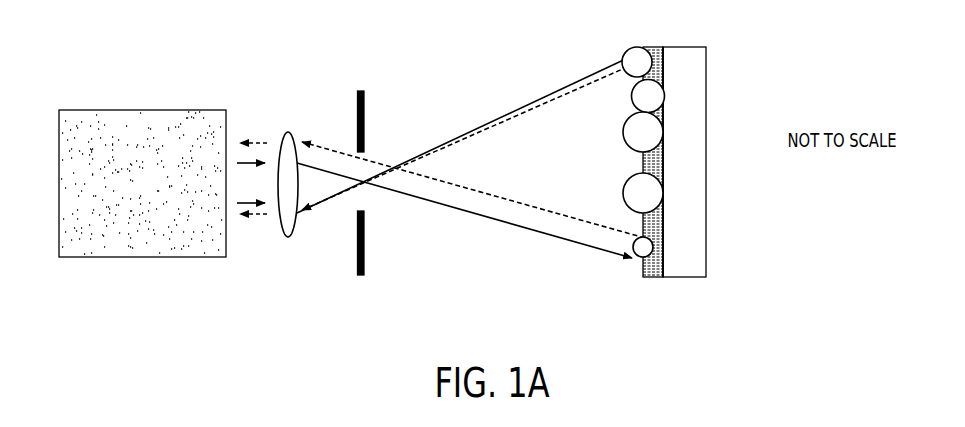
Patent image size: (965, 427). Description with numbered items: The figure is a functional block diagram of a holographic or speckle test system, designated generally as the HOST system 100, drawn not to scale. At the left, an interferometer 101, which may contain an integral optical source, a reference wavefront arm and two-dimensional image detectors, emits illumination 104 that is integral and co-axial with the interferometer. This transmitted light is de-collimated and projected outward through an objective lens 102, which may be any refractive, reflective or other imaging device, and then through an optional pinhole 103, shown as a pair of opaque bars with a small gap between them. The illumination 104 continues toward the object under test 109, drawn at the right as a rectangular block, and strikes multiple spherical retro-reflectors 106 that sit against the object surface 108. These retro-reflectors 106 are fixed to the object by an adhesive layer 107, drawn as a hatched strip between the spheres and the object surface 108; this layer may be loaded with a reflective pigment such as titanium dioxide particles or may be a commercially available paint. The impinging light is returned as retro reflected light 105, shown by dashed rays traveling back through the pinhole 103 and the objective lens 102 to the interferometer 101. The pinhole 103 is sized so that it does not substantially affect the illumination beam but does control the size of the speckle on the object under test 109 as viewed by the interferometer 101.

The HOST system 100 is at (766, 63).
The interferometer 101 is at (142, 257).
The objective lens 102 is at (289, 132).
The pinhole 103 is at (360, 275).
The illumination 104 is at (500, 220).
The retro reflected light 105 is at (538, 213).
The retro-reflectors 106 is at (733, 88).
The adhesive layer 107 is at (655, 277).
The object surface 108 is at (663, 257).
The object under test 109 is at (707, 188).